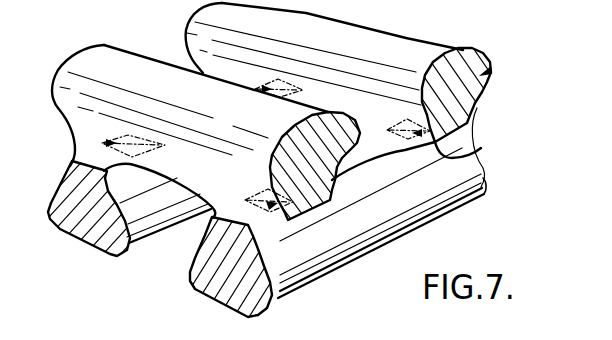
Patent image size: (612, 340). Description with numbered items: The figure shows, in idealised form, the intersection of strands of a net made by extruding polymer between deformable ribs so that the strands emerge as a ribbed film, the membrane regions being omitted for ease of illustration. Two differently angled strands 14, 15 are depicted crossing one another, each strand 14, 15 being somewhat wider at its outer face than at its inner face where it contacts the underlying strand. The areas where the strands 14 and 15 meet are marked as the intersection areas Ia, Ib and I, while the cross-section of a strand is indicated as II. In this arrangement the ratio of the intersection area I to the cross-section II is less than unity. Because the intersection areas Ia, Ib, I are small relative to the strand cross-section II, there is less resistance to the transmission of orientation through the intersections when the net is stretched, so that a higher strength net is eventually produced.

The strand 14 is at (465, 93).
The strand 15 is at (88, 222).
The intersection area I is at (106, 143).
The cross-section of strands II is at (491, 68).
The intersection area Ia is at (284, 225).
The intersection area Ib is at (421, 169).